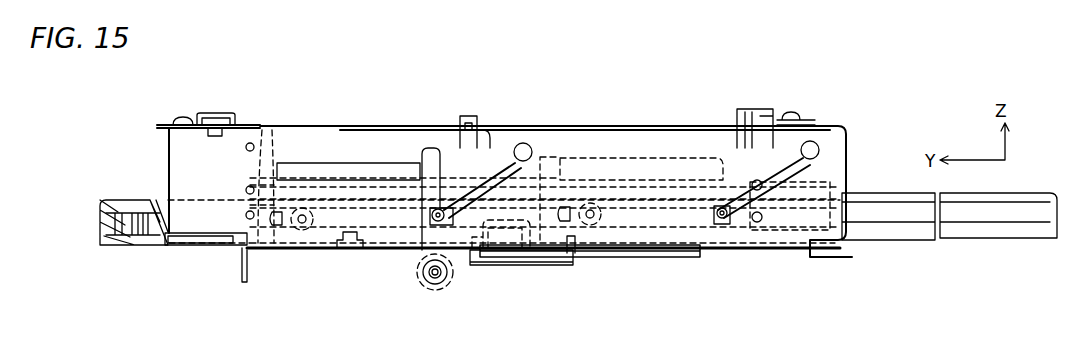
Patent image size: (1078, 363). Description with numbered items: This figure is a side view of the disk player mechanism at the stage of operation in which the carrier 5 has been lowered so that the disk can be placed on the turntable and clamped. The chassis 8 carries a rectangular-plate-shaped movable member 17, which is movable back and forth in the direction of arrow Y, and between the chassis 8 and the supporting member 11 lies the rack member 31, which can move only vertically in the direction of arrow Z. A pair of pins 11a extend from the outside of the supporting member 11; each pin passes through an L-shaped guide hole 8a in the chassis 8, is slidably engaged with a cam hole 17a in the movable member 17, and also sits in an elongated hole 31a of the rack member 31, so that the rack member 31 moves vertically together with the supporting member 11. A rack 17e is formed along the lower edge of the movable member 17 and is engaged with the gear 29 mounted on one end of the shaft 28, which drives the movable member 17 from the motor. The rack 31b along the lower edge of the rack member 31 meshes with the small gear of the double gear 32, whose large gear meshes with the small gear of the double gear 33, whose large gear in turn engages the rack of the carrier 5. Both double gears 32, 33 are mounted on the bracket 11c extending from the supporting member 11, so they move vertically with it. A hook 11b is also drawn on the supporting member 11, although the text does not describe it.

The carrier 5 is at (1030, 192).
The chassis 8 is at (213, 220).
The L-shaped guide hole 8a is at (342, 170).
The supporting member 11 is at (823, 182).
The pin 11a is at (720, 205).
The hook 11b is at (438, 200).
The bracket 11c is at (558, 265).
The movable member 17 is at (787, 215).
The cam hole 17a is at (494, 172).
The rack 17e is at (647, 255).
The shaft 28 is at (425, 290).
The gear 29 is at (445, 290).
The rack member 31 is at (262, 128).
The elongated hole 31a is at (274, 130).
The rack 31b is at (412, 240).
The double gear 32 is at (473, 265).
The double gear 33 is at (518, 220).